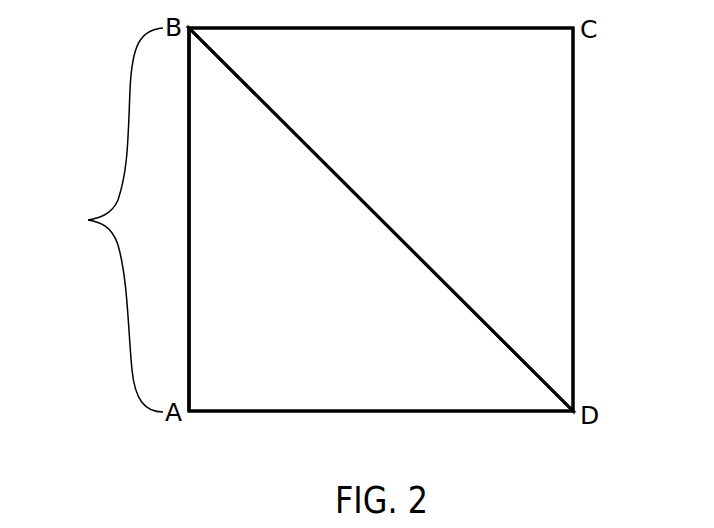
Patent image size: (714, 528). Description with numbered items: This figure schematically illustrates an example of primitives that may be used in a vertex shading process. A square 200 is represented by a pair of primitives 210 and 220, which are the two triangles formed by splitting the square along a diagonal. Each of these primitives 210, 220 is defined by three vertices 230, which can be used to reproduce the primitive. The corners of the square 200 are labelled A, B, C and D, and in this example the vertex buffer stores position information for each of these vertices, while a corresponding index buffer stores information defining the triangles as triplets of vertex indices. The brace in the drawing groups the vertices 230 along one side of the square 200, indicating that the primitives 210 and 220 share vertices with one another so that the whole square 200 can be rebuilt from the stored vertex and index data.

The square 200 is at (656, 246).
The primitive 210 is at (321, 322).
The primitive 220 is at (482, 156).
The vertices 230 is at (88, 220).